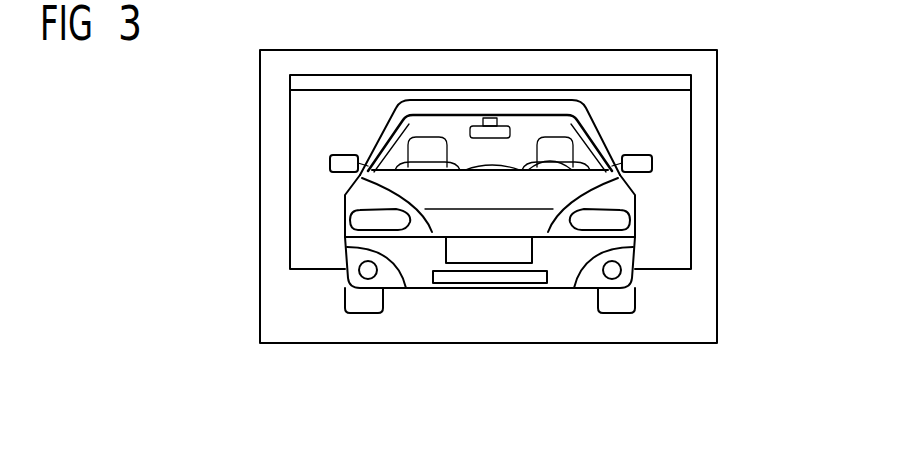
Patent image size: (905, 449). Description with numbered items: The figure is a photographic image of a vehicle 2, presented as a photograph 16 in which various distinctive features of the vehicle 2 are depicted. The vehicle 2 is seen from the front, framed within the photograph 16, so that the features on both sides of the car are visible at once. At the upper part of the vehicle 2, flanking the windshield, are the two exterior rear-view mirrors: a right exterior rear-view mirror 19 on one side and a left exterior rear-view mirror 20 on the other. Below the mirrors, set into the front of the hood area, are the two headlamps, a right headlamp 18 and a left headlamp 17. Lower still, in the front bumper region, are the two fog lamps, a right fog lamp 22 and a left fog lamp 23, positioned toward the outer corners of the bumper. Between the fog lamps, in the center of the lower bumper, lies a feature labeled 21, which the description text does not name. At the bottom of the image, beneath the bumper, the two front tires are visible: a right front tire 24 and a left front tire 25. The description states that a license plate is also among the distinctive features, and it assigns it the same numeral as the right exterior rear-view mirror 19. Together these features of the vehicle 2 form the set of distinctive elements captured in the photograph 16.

The vehicle 2 is at (538, 100).
The photograph 16 is at (708, 123).
The left headlamp 17 is at (630, 216).
The right headlamp 18 is at (350, 218).
The right exterior rear-view mirror 19 is at (330, 158).
The left exterior rear-view mirror 20 is at (652, 163).
The lower air inlet grille 21 is at (493, 284).
The right fog lamp 22 is at (370, 270).
The left fog lamp 23 is at (610, 270).
The right front tire 24 is at (365, 314).
The left front tire 25 is at (618, 314).